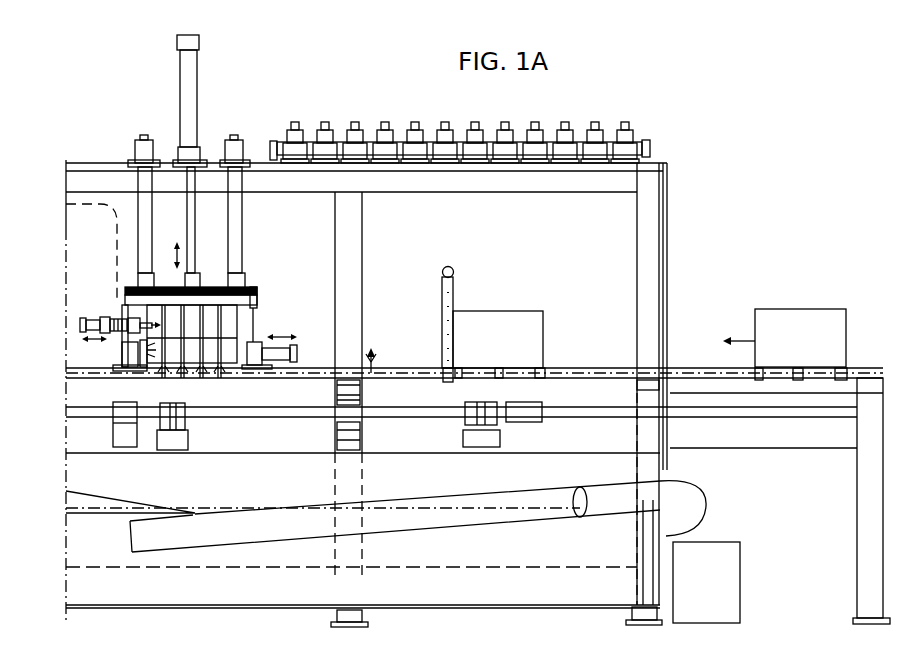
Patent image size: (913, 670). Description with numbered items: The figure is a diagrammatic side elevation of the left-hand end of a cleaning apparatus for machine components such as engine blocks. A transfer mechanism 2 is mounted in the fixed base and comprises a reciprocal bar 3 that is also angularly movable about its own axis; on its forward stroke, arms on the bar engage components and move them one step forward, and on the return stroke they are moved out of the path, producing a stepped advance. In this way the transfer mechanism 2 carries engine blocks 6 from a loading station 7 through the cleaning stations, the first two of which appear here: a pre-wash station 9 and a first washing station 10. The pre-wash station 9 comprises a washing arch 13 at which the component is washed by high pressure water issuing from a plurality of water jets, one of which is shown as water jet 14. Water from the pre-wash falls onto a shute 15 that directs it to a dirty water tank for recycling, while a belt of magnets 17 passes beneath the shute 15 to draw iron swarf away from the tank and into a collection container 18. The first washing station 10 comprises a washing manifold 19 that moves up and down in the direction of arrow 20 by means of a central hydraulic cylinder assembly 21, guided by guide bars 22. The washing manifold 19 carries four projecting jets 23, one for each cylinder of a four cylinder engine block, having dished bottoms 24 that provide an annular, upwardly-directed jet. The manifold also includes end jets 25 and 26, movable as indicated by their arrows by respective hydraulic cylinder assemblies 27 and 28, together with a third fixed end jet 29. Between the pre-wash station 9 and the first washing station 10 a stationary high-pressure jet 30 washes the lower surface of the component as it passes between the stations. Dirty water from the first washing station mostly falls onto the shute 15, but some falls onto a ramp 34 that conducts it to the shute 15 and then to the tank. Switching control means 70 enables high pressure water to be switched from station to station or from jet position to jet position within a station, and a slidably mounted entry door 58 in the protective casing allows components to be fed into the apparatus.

The transfer mechanism 2 is at (289, 417).
The reciprocal bar 3 is at (440, 414).
The engine block 6 is at (649, 343).
The loading station 7 is at (712, 278).
The pre-wash station 9 is at (499, 225).
The first washing station 10 is at (201, 252).
The washing arch 13 is at (455, 300).
The water jet 14 is at (454, 279).
The shute 15 is at (516, 505).
The belt of magnets 17 is at (580, 505).
The collection container 18 is at (706, 582).
The washing manifold 19 is at (237, 295).
The arrow 20 is at (170, 213).
The central hydraulic cylinder assembly 21 is at (199, 93).
The guide bars 22 is at (243, 223).
The projecting jets 23 is at (219, 379).
The dished bottoms 24 is at (183, 379).
The end jet 25 is at (139, 319).
The end jet 26 is at (256, 344).
The hydraulic cylinder assembly 27 is at (79, 331).
The hydraulic cylinder assembly 28 is at (297, 356).
The third fixed end jet 29 is at (121, 358).
The stationary high-pressure jet 30 is at (372, 375).
The ramp 34 is at (118, 497).
The entry door 58 is at (669, 337).
The switching control means 70 is at (589, 114).